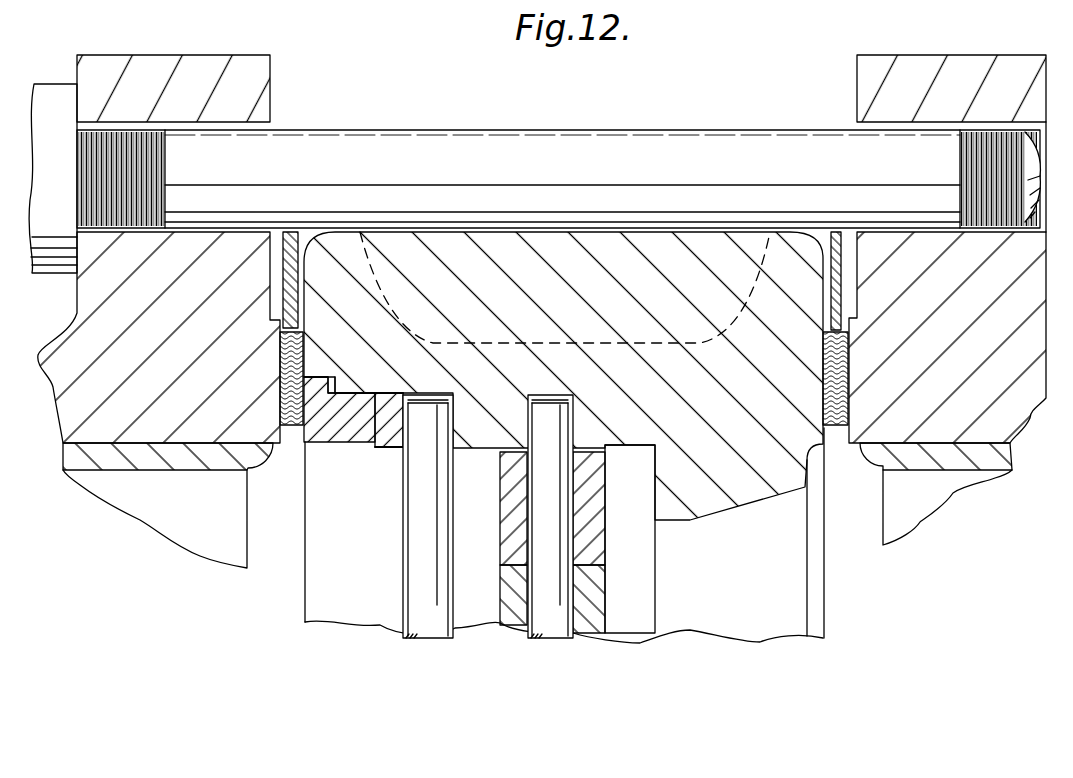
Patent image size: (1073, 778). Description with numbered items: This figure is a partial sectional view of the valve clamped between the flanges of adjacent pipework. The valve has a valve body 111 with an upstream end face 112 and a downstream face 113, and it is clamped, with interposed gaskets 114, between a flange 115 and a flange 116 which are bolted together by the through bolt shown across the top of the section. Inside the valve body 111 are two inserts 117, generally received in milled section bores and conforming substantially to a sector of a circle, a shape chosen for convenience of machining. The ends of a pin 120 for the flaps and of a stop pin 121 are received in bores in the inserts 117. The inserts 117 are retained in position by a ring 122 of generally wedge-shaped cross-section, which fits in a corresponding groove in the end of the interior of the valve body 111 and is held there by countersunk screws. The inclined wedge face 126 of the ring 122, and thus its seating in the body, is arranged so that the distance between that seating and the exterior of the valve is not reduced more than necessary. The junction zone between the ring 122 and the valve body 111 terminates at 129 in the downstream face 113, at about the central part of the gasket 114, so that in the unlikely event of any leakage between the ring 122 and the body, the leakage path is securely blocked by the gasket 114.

The valve body 111 is at (360, 312).
The upstream end face 112 is at (820, 328).
The downstream face 113 is at (308, 308).
The gasket 114 is at (293, 428).
The flange 115 is at (963, 351).
The flange 116 is at (177, 351).
The insert 117 is at (388, 447).
The pin 120 is at (552, 623).
The stop pin 121 is at (430, 625).
The ring 122 is at (330, 447).
The inclined wedge face 126 is at (363, 410).
The junction zone termination 129 is at (318, 355).